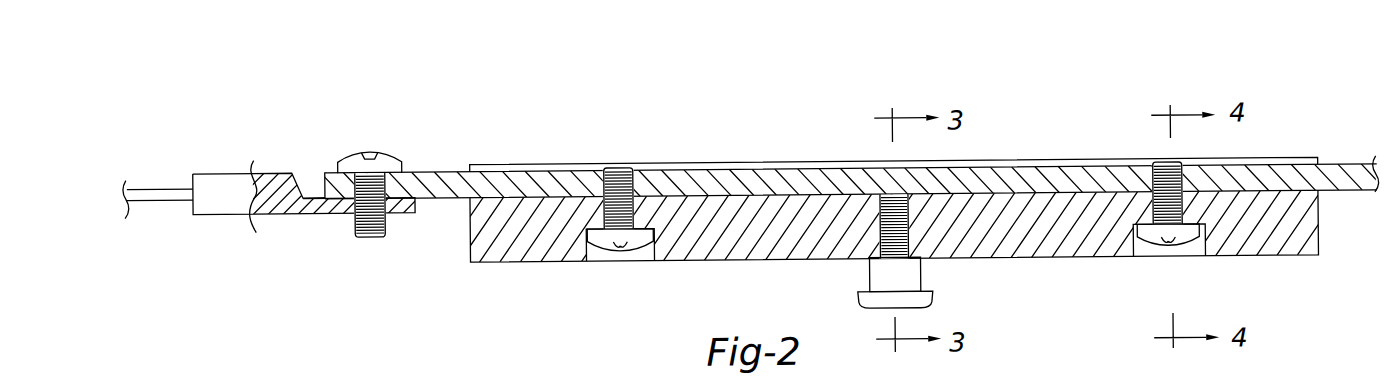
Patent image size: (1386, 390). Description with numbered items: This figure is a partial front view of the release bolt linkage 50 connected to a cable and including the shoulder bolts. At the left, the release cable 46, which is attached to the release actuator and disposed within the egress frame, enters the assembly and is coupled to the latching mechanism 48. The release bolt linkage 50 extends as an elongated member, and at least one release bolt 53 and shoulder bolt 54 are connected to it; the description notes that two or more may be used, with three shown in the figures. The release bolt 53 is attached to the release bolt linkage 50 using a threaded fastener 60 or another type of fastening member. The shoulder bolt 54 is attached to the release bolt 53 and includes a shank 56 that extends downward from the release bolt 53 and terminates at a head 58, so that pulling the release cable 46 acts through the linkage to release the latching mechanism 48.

The release cable 46 is at (163, 188).
The latching mechanism 48 is at (1272, 132).
The release bolt linkage 50 is at (598, 152).
The release bolt 53 is at (517, 234).
The shoulder bolt 54 is at (901, 253).
The shank 56 is at (878, 279).
The head 58 is at (935, 294).
The threaded fastener 60 is at (633, 182).